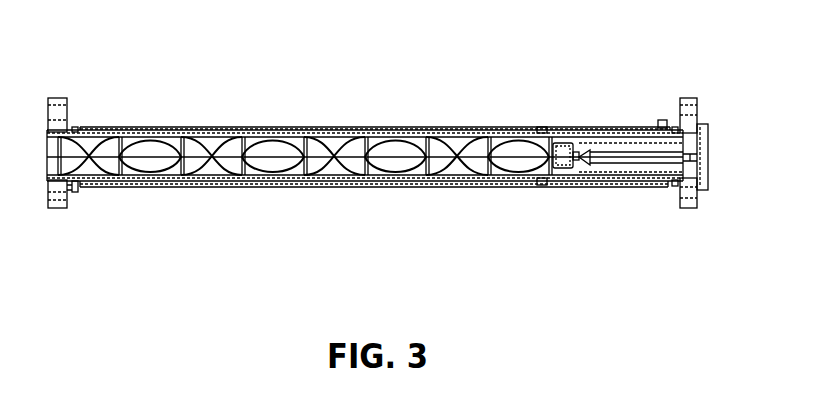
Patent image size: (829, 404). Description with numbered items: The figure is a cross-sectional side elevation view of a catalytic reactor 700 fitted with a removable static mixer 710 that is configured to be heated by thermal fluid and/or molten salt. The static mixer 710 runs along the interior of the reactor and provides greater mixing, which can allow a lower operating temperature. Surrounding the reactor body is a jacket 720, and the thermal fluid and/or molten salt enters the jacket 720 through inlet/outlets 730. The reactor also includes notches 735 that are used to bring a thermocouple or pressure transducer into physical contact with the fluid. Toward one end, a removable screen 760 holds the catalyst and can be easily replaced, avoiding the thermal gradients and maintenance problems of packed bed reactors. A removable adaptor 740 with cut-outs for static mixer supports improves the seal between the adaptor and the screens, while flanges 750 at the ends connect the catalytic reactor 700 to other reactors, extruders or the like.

The catalytic reactor 700 is at (688, 92).
The static mixer 710 is at (282, 150).
The jacket 720 is at (135, 182).
The inlet/outlets 730 is at (658, 120).
The notches 735 is at (545, 130).
The removable adaptor 740 is at (698, 182).
The flanges 750 is at (65, 212).
The removable screen 760 is at (612, 155).